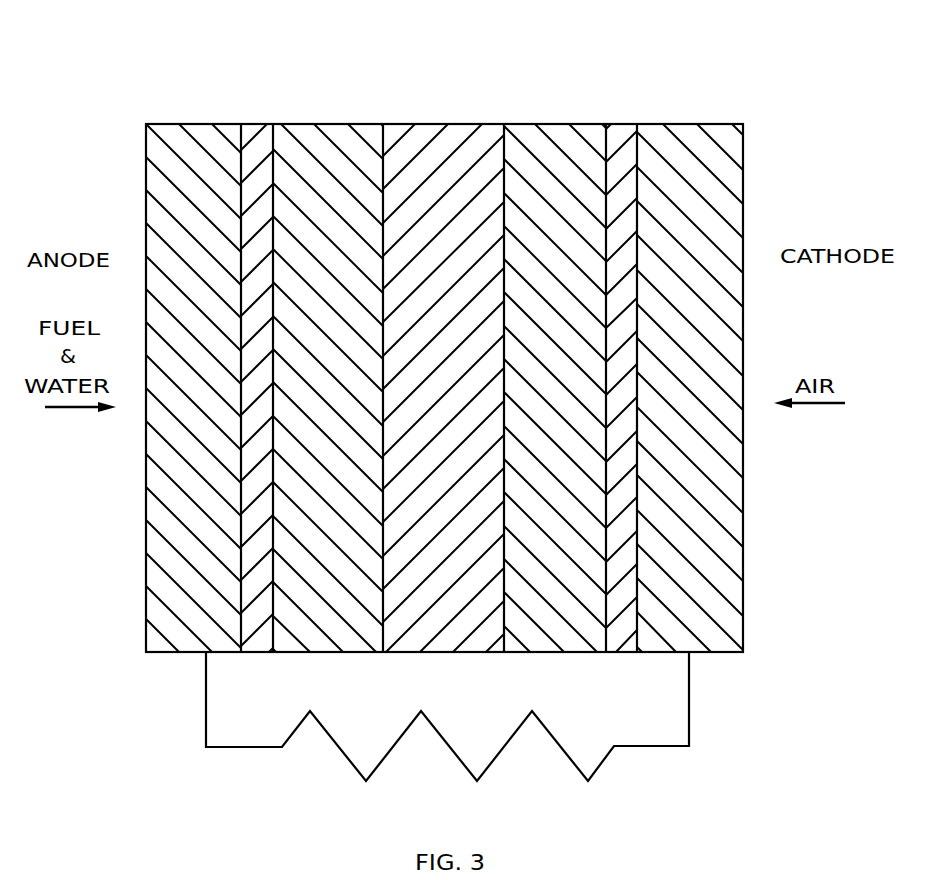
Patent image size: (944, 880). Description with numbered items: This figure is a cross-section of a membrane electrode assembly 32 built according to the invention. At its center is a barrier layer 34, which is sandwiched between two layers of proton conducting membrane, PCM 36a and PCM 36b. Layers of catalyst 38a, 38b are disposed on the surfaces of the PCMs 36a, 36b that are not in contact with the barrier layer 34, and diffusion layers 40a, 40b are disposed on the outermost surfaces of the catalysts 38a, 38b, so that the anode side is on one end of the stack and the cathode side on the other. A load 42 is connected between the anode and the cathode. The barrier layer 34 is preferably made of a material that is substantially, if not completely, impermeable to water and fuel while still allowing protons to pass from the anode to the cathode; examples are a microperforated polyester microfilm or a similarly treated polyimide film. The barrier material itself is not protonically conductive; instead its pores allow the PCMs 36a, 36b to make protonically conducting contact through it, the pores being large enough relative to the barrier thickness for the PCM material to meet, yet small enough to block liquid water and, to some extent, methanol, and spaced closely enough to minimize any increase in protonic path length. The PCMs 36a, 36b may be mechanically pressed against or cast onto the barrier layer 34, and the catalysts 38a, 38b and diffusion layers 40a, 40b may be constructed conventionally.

The membrane electrode assembly 32 is at (846, 42).
The barrier layer 34 is at (409, 124).
The PCM layer 36a is at (308, 124).
The PCM layer 36b is at (528, 124).
The catalyst layer 38a is at (255, 124).
The catalyst layer 38b is at (628, 123).
The diffusion layer 40a is at (193, 124).
The diffusion layer 40b is at (710, 123).
The load 42 is at (643, 747).